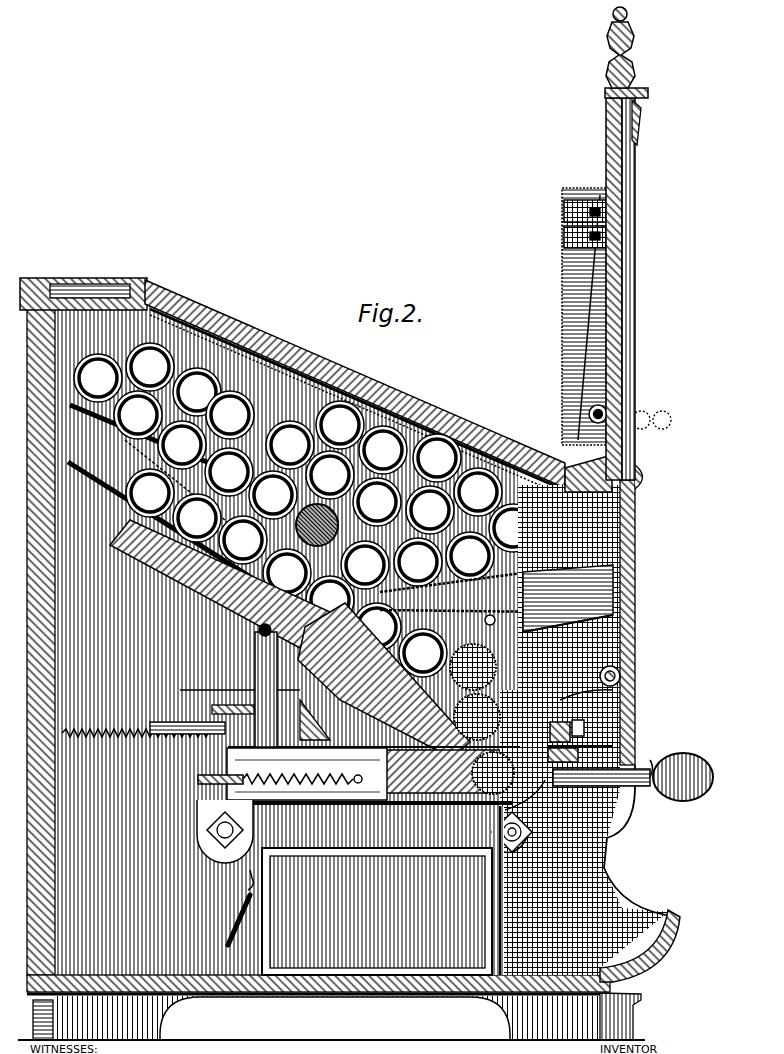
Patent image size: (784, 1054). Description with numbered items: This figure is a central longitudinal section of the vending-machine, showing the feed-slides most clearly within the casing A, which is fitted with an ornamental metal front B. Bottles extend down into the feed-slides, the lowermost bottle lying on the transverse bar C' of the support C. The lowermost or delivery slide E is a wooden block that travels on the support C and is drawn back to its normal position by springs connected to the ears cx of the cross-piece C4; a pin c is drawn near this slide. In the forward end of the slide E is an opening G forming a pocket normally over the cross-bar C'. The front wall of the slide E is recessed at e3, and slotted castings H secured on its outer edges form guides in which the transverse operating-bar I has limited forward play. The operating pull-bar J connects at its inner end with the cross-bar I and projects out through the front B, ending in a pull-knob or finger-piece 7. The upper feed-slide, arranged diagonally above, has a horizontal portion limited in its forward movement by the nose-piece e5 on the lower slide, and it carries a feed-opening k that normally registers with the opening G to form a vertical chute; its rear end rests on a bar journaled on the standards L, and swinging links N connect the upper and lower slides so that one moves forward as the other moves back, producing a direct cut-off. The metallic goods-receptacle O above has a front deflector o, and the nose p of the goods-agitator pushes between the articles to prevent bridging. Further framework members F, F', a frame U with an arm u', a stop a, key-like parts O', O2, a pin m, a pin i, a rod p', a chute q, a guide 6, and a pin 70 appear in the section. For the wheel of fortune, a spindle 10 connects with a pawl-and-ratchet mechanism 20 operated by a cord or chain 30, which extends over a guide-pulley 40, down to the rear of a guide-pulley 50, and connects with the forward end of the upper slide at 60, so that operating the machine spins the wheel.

The casing A is at (331, 659).
The ornamental metal front B is at (630, 660).
The support C is at (373, 786).
The transverse bar C' is at (475, 890).
The cross-piece C4 is at (217, 770).
The ears cx is at (300, 767).
The pin c is at (376, 815).
The lowermost or delivery slide E is at (377, 911).
The frame plate F is at (305, 656).
The frame arm F' is at (473, 647).
The opening G is at (481, 831).
The slotted castings H is at (525, 839).
The transverse operating-bar I is at (614, 748).
The operating pull-bar J is at (650, 790).
The standards L is at (266, 689).
The swinging links N is at (236, 837).
The goods-receptacle O is at (305, 510).
The key lever O' is at (148, 437).
The key lever O2 is at (118, 466).
The spring U is at (218, 728).
The lever arm u' is at (240, 702).
The stop a is at (568, 226).
The recess e3 is at (612, 838).
The nose-piece e5 is at (612, 726).
The key stem i is at (454, 719).
The feed-opening k is at (274, 637).
The pin m is at (205, 802).
The deflector o is at (490, 604).
The nose p is at (329, 700).
The rod p' is at (455, 597).
The chute q is at (568, 596).
The guide 6 is at (568, 616).
The post 7 is at (640, 738).
The indicator tablet 10 is at (563, 223).
The indicator tablet 20 is at (562, 240).
The cord or chain 30 is at (565, 322).
The guide-pulley 40 is at (570, 414).
The guide-pulley 50 is at (620, 676).
The connection point 60 is at (614, 700).
The pin 70 is at (654, 427).